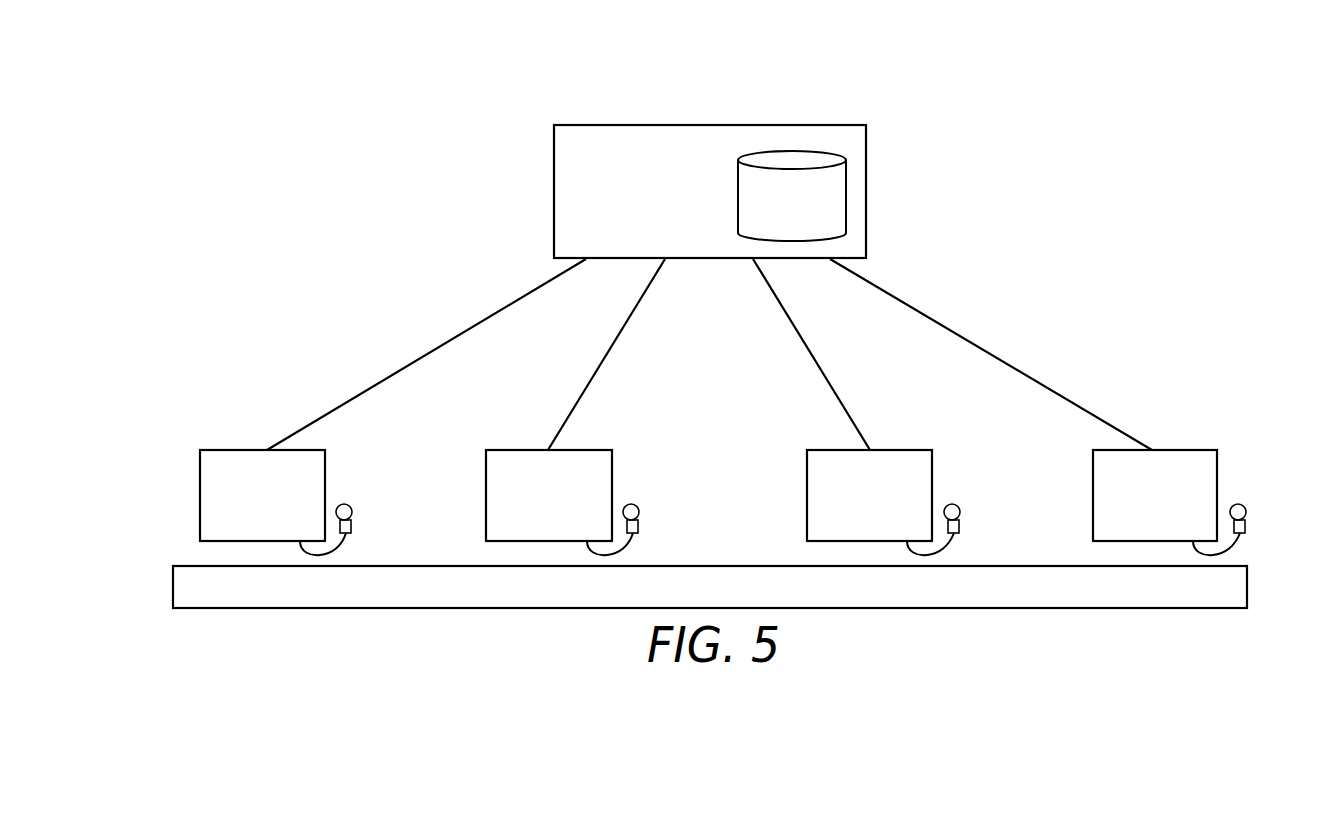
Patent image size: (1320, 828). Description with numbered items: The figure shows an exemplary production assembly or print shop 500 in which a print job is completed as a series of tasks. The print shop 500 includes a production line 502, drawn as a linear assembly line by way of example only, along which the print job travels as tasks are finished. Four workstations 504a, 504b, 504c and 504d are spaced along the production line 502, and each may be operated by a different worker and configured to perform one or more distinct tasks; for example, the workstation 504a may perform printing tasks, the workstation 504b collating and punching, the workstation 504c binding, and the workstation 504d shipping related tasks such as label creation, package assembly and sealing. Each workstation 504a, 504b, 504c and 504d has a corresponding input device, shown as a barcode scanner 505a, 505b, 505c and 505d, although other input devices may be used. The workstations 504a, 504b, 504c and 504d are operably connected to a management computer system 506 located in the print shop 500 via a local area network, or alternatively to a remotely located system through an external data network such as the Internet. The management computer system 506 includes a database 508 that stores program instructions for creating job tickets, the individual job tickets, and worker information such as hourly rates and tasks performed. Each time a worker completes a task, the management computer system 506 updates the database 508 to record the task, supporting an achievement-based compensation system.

The print shop 500 is at (485, 146).
The production line 502 is at (173, 588).
The workstation 504a is at (232, 450).
The workstation 504b is at (518, 450).
The workstation 504c is at (839, 450).
The workstation 504d is at (1182, 450).
The barcode scanner 505a is at (352, 510).
The barcode scanner 505b is at (639, 510).
The barcode scanner 505c is at (960, 510).
The barcode scanner 505d is at (1246, 510).
The management computer system 506 is at (700, 125).
The database 508 is at (792, 196).